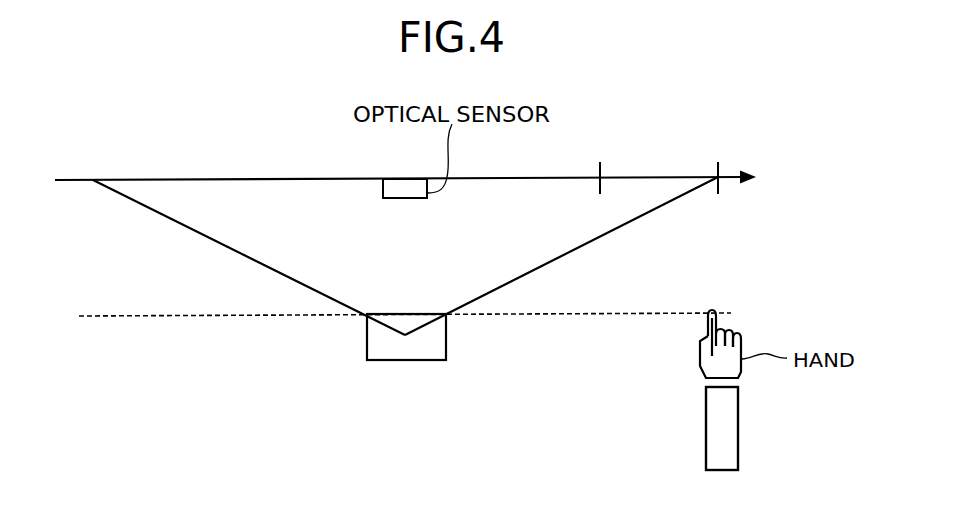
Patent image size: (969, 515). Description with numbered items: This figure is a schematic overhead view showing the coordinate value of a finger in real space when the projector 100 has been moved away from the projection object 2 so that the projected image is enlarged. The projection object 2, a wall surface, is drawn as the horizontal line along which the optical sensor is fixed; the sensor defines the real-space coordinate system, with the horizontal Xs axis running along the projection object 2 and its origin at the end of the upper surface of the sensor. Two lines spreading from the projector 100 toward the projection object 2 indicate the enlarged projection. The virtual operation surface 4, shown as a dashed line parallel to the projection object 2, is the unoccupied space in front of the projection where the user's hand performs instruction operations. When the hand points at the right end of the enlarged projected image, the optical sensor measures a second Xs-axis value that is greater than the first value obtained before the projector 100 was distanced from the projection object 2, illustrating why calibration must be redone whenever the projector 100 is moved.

The projection object 2 is at (148, 178).
The virtual operation surface 4 is at (533, 312).
The projector 100 is at (405, 362).